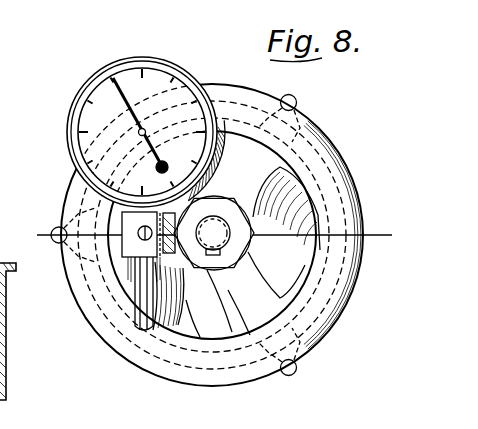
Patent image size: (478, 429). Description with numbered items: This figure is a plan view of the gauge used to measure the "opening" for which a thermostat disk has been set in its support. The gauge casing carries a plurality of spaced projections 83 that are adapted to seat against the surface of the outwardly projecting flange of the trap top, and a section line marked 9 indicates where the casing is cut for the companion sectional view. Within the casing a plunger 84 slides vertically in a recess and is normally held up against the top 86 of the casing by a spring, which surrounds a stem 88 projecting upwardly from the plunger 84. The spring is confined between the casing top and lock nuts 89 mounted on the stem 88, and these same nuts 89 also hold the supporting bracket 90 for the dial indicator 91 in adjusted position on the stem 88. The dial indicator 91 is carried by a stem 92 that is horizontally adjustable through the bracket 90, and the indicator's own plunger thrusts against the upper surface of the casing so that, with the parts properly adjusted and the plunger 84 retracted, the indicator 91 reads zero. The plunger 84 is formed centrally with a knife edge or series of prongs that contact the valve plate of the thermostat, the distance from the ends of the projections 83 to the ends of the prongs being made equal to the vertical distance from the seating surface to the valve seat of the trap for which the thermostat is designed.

The section line 9- 9 is at (33, 212).
The spaced projections 83 is at (326, 134).
The plunger 84 is at (297, 193).
The top of the casing 86 is at (260, 165).
The stem 88 is at (240, 248).
The lock nuts 89 is at (245, 258).
The supporting bracket 90 is at (185, 322).
The dial indicator 91 is at (193, 78).
The stem 92 is at (135, 290).